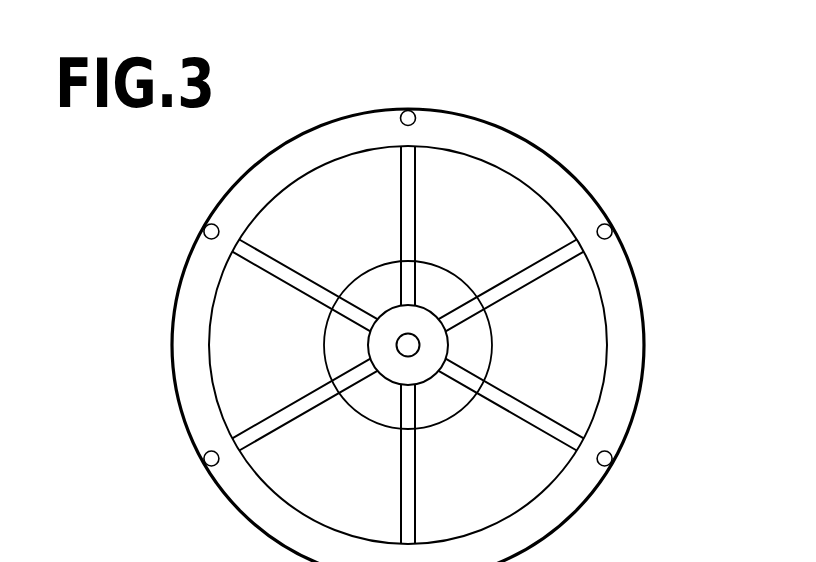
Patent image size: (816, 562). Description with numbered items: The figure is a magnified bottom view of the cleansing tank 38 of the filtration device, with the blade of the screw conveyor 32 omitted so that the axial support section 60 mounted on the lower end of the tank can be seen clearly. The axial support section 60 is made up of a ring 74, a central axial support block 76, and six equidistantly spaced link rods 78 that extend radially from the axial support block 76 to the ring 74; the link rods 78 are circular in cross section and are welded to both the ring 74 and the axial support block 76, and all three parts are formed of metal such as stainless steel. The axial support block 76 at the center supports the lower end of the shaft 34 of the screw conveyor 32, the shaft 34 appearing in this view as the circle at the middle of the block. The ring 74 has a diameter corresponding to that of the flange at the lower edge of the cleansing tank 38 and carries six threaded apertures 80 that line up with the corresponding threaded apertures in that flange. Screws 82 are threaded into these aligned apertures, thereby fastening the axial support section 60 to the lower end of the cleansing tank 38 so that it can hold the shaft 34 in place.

The cleansing tank 38 is at (541, 136).
The ring 74 is at (620, 290).
The threaded apertures 80 is at (613, 226).
The screws 82 is at (605, 464).
The screw conveyor 32 is at (362, 272).
The shaft 34 is at (322, 335).
The axial support block 76 is at (430, 343).
The axial support section 60 is at (520, 262).
The link rods 78 is at (415, 492).